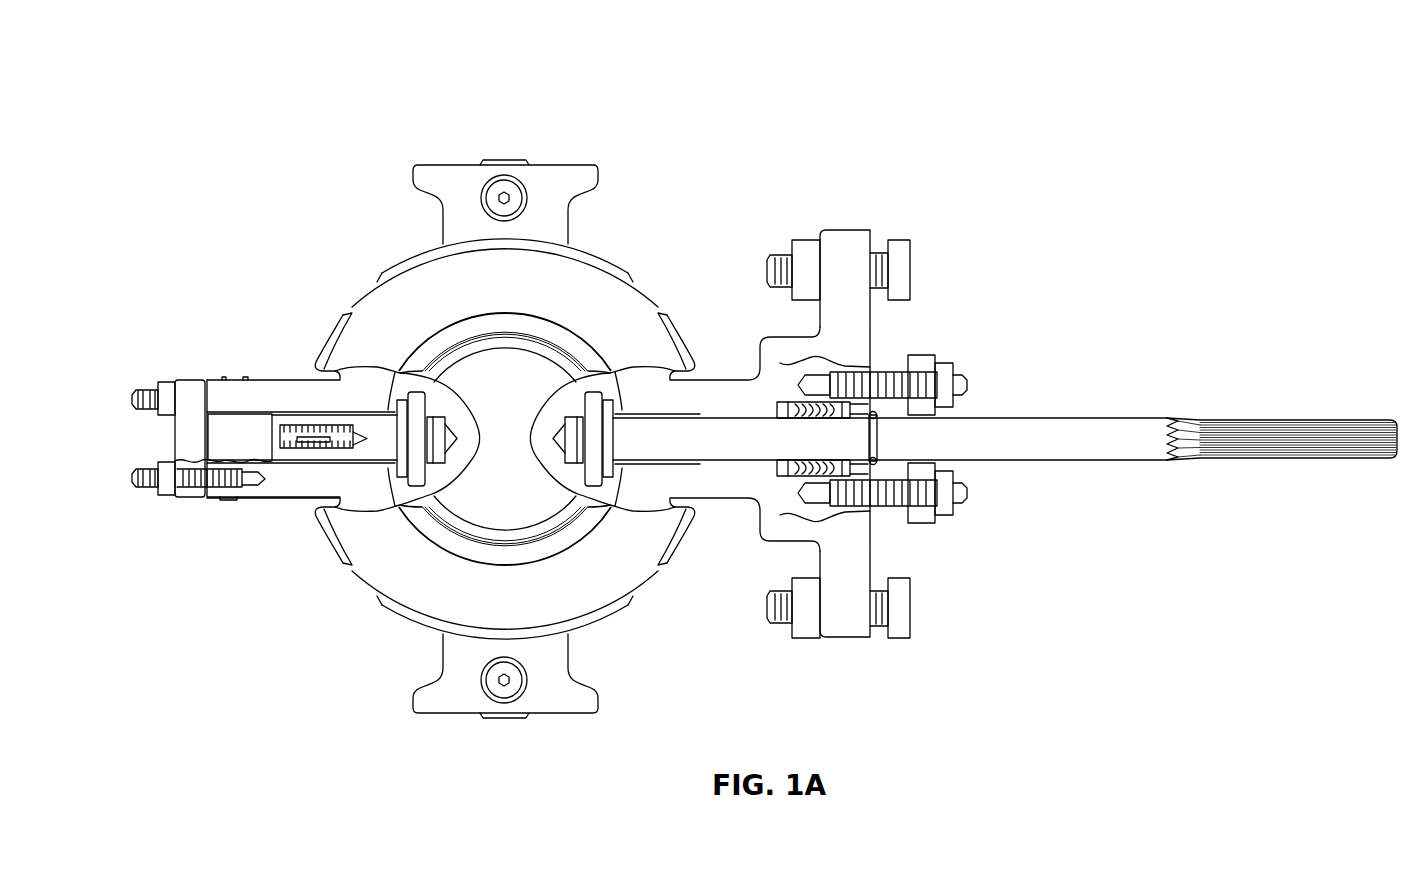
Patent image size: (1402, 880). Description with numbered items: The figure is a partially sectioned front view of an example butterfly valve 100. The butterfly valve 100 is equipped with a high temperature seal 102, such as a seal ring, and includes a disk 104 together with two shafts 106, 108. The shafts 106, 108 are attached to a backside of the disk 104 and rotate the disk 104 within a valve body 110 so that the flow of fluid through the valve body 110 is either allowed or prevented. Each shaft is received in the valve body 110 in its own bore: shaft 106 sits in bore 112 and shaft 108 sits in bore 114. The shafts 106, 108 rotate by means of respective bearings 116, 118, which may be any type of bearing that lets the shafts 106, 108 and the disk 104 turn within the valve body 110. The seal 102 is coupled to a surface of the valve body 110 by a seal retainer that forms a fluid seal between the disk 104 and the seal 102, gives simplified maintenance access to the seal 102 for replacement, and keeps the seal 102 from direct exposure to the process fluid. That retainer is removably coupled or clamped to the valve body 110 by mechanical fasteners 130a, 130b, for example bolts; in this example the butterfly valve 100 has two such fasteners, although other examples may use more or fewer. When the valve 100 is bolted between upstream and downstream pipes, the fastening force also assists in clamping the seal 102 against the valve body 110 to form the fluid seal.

The butterfly valve 100 is at (668, 82).
The high temperature seal 102 is at (428, 360).
The disk 104 is at (518, 390).
The shaft 106 is at (730, 443).
The shaft 108 is at (378, 465).
The valve body 110 is at (413, 303).
The bore 112 is at (645, 412).
The bore 114 is at (375, 442).
The bearing 116 is at (657, 468).
The bearing 118 is at (323, 410).
The mechanical fastener 130a is at (504, 198).
The mechanical fastener 130b is at (504, 680).